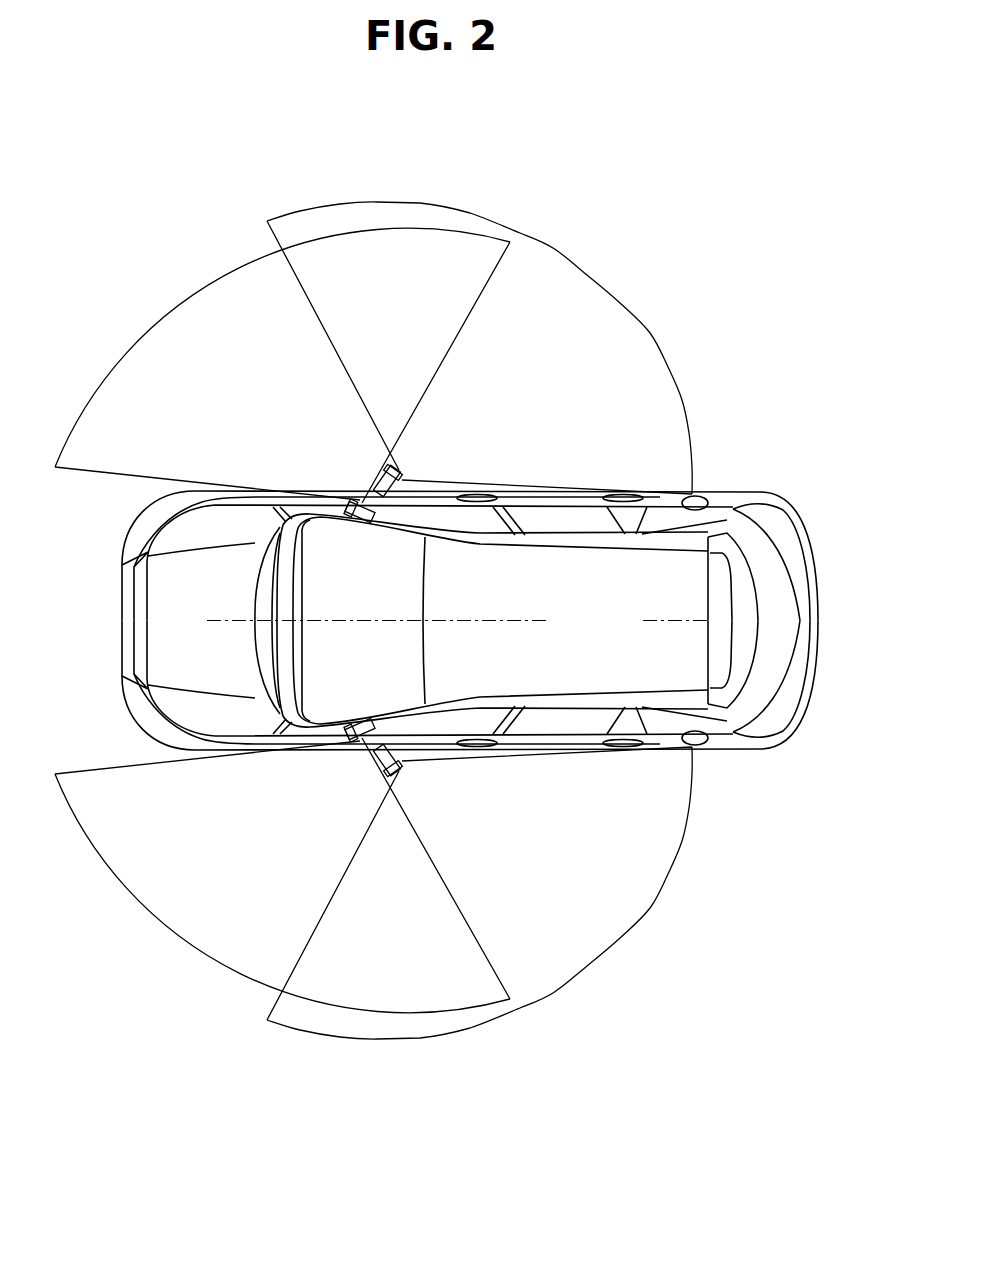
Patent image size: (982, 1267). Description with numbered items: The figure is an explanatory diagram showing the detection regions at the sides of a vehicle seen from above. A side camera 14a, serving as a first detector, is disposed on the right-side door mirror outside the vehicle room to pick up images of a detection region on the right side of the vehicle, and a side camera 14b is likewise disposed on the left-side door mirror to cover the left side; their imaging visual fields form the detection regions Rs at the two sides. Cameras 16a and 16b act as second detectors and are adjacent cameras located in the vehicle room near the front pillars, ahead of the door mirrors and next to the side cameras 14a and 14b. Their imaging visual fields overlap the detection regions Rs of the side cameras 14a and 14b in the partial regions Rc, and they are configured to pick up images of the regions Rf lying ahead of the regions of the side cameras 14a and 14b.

The side camera 14a is at (405, 473).
The side camera 14b is at (407, 777).
The camera 16a is at (362, 500).
The camera 16b is at (352, 743).
The region ahead of the regions of the side cameras Rf is at (173, 362).
The detection region of the side cameras Rs is at (603, 347).
The partial region Rc is at (403, 263).